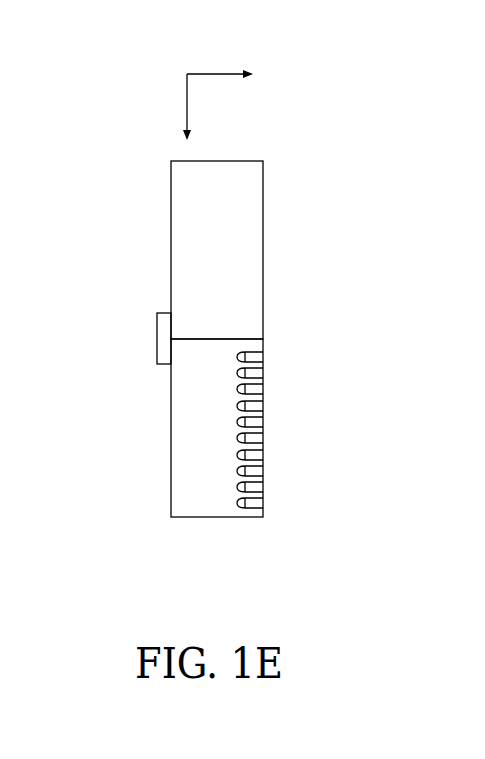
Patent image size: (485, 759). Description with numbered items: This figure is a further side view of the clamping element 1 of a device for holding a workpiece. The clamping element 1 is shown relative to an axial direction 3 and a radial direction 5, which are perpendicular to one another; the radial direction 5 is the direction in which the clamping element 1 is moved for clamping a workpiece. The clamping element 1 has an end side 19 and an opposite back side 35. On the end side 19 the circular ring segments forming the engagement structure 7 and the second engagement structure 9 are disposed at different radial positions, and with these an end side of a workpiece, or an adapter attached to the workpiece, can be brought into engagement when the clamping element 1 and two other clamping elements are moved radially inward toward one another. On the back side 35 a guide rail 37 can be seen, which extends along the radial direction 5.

The clamping element 1 is at (217, 264).
The axial direction 3 is at (220, 70).
The radial direction 5 is at (187, 103).
The engagement structure 7 is at (263, 443).
The second engagement structure 9 is at (263, 363).
The end side 19 is at (268, 241).
The back side 35 is at (165, 443).
The guide rail 37 is at (157, 339).